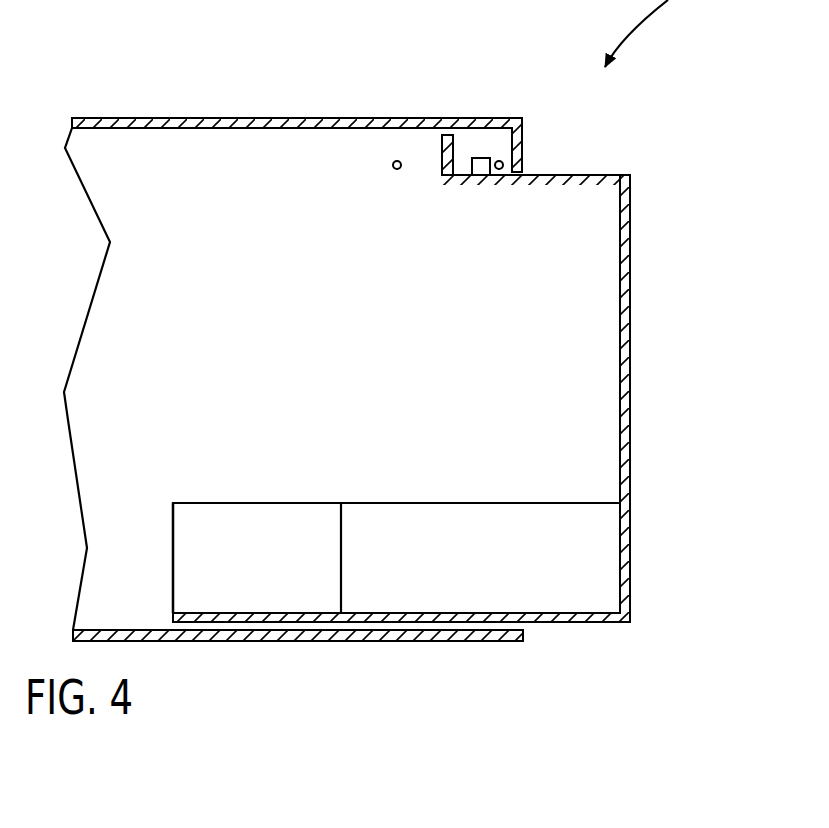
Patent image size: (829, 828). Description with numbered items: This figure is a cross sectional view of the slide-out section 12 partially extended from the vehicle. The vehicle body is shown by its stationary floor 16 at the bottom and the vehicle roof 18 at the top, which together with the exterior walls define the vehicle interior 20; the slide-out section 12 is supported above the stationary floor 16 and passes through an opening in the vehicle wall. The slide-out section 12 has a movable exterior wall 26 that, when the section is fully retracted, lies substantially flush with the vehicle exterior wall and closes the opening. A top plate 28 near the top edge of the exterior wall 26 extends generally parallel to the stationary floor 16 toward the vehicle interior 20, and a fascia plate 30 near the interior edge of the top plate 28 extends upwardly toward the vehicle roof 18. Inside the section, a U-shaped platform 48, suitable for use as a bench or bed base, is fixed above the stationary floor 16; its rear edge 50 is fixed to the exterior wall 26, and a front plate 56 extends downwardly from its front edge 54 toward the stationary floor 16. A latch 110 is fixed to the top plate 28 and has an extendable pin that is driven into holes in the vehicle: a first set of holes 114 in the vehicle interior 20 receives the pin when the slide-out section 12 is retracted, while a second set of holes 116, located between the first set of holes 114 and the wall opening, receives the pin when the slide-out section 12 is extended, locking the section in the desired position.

The slide-out section 12 is at (655, 317).
The stationary floor 16 is at (125, 630).
The vehicle roof 18 is at (198, 117).
The vehicle interior 20 is at (302, 347).
The movable exterior wall 26 is at (630, 375).
The top plate 28 is at (592, 175).
The fascia plate 30 is at (442, 172).
The platform 48 is at (415, 500).
The rear edge 50 is at (612, 500).
The front edge 54 is at (175, 500).
The front plate 56 is at (173, 565).
The latch 110 is at (480, 177).
The first set of holes 114 is at (390, 168).
The second set of holes 116 is at (504, 167).